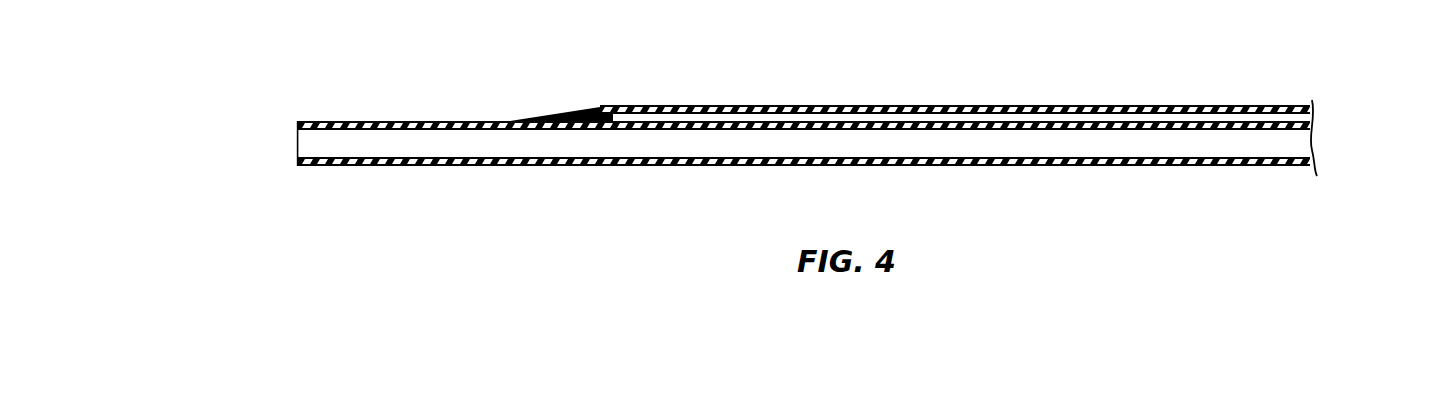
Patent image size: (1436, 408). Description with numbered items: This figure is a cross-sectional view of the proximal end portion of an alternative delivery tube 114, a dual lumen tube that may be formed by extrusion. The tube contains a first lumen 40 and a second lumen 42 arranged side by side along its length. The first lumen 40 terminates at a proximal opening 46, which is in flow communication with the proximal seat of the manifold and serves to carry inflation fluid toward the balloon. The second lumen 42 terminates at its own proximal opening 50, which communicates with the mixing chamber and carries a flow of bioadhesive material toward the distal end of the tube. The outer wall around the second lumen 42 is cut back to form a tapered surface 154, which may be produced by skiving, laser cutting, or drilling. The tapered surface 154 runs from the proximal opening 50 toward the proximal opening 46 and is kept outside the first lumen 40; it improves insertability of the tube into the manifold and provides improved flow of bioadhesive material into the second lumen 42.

The alternative delivery tube 114 is at (1209, 92).
The second lumen 42 is at (1308, 118).
The first lumen 40 is at (1295, 144).
The proximal opening 46 is at (302, 166).
The tapered surface 154 is at (558, 119).
The proximal opening 50 is at (604, 107).